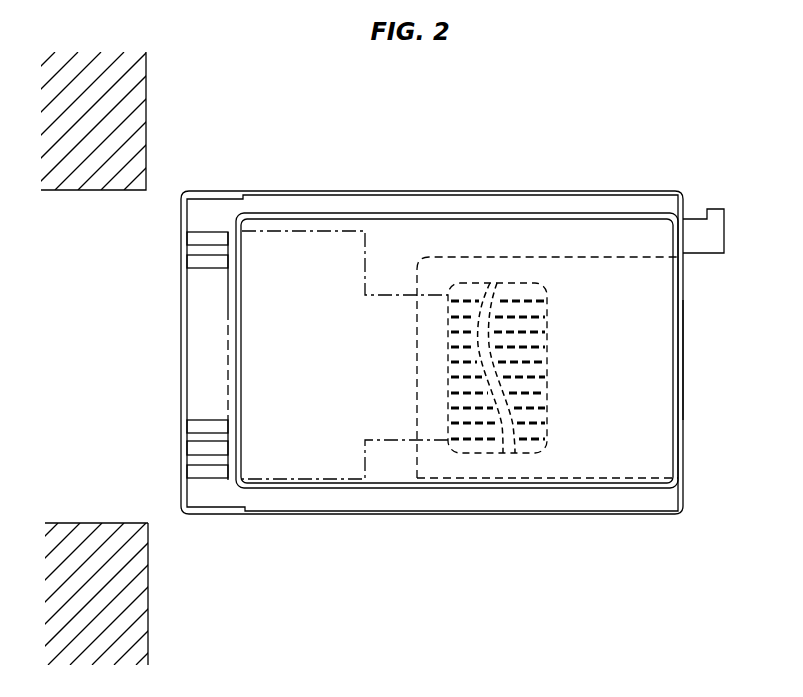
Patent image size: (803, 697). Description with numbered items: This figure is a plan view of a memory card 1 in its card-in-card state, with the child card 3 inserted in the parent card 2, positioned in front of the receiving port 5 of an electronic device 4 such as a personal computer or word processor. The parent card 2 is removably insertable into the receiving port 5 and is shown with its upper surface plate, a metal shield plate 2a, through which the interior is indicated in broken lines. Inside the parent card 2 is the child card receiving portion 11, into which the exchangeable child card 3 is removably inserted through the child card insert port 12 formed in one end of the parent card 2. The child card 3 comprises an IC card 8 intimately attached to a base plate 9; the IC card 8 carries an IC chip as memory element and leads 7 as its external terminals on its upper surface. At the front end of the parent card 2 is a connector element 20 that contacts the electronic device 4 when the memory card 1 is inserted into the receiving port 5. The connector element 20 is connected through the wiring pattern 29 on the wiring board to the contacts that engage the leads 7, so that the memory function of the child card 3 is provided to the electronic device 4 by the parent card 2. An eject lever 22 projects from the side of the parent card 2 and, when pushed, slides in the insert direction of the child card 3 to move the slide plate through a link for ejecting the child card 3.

The memory card 1 is at (642, 190).
The parent card 2 is at (418, 191).
The shield plate 2a is at (581, 455).
The child card 3 is at (599, 284).
The electronic device 4 is at (140, 103).
The receiving port 5 is at (133, 238).
The leads 7 is at (450, 355).
The IC card 8 is at (555, 367).
The base plate 9 is at (557, 283).
The child card receiving portion 11 is at (478, 257).
The child card insert port 12 is at (686, 440).
The connector element 20 is at (208, 423).
The eject lever 22 is at (703, 245).
The wiring pattern 29 is at (390, 442).